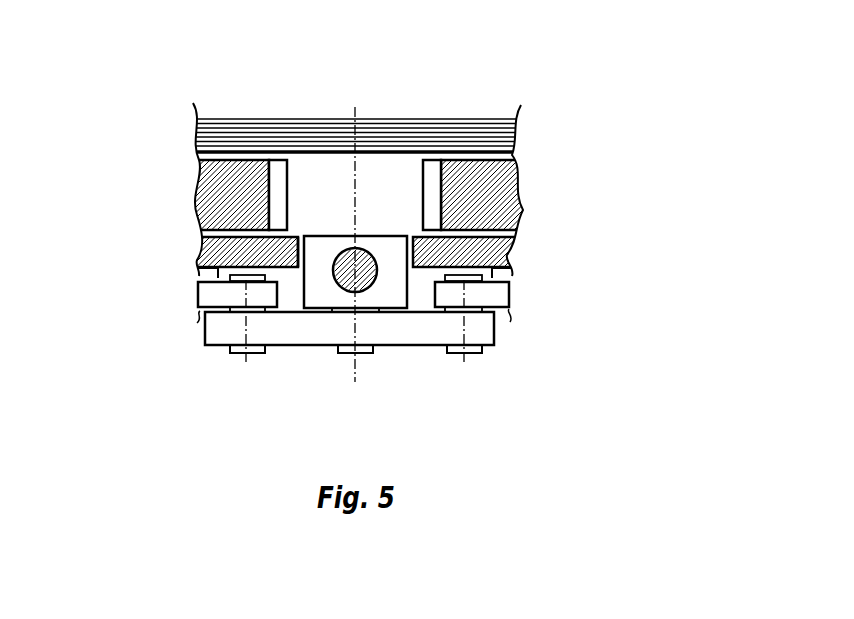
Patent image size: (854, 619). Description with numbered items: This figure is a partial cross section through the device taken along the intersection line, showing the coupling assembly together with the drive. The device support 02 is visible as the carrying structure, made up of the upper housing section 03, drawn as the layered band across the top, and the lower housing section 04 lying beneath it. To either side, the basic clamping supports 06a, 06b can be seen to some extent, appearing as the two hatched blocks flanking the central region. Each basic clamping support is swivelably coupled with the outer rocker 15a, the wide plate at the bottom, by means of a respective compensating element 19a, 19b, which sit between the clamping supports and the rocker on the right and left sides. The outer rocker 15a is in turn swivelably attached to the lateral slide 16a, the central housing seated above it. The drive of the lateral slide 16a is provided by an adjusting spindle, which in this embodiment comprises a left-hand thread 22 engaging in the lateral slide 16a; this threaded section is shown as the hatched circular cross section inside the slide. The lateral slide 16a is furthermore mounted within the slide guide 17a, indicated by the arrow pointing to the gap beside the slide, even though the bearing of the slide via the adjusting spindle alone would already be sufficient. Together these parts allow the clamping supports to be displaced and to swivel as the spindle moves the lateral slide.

The device support 02 is at (456, 199).
The upper housing section 03 is at (487, 143).
The lower housing section 04 is at (500, 252).
The basic clamping support 06a is at (433, 185).
The basic clamping support 06b is at (232, 191).
The outer rocker 15a is at (232, 325).
The lateral slide 16a is at (325, 288).
The slide guide 17a is at (303, 227).
The compensating element 19a is at (503, 293).
The compensating element 19b is at (215, 296).
The left-hand thread 22 is at (375, 285).